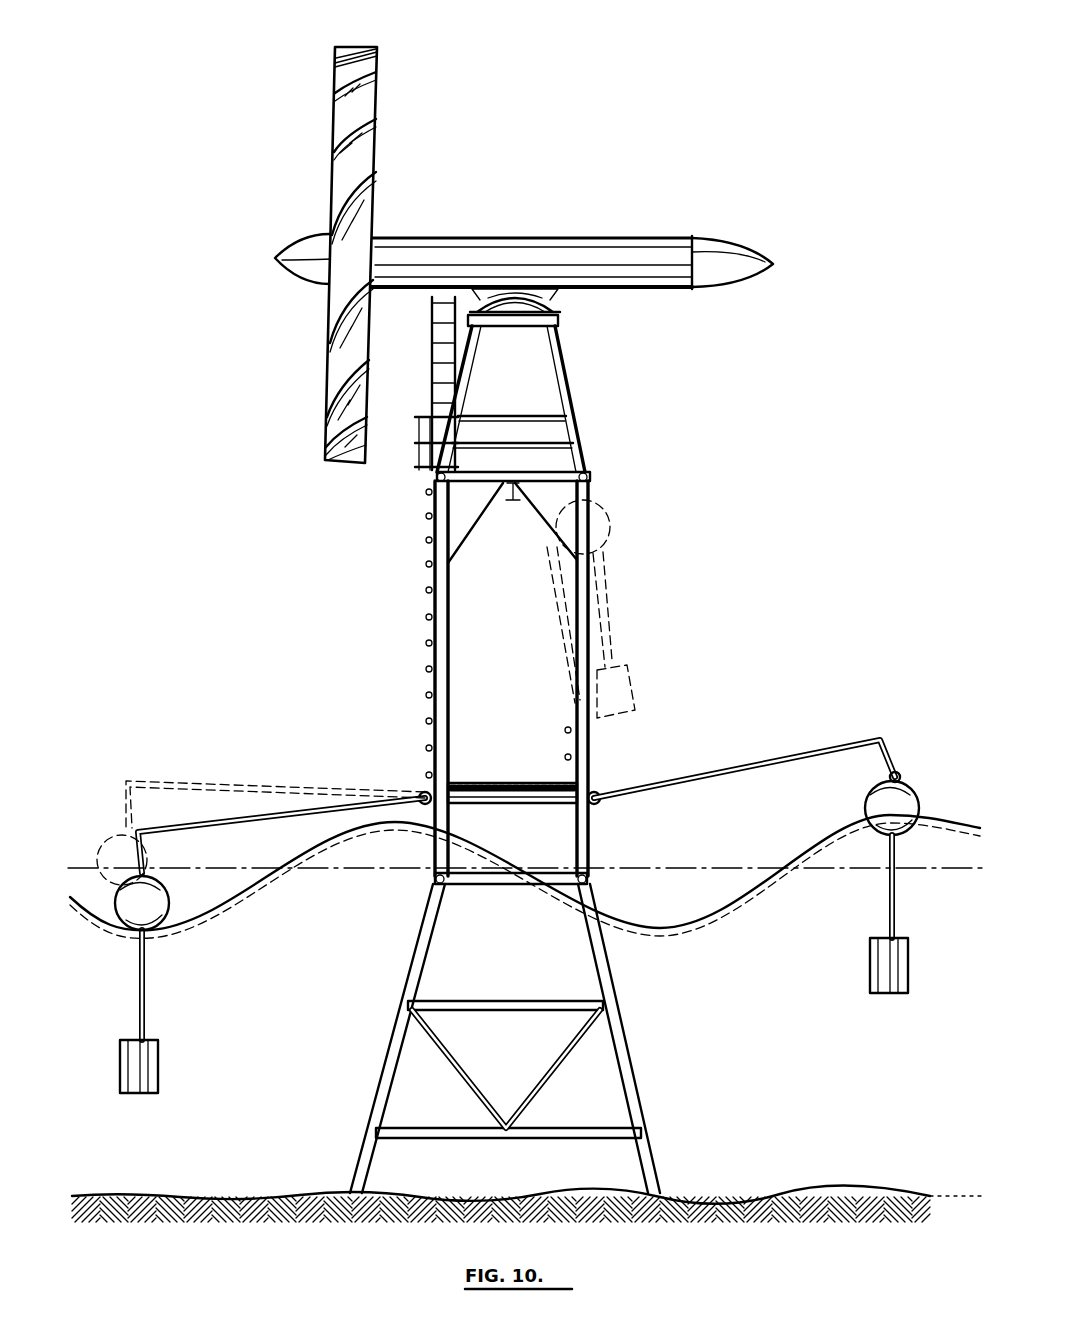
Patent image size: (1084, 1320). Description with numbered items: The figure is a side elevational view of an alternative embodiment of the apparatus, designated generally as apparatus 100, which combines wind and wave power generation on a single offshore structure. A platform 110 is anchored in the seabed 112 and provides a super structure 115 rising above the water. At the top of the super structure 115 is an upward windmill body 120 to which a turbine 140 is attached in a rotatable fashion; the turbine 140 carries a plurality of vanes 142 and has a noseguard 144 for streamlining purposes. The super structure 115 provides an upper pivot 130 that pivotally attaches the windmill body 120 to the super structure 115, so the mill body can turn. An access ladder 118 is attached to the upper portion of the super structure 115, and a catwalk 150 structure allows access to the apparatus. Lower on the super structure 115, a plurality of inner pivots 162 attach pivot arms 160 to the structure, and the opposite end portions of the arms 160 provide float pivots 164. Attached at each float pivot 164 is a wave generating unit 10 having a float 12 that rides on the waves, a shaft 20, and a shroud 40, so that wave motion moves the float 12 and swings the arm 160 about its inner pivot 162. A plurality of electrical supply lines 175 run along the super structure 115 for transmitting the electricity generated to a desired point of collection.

The wave generating unit 10 is at (898, 757).
The float 12 is at (104, 840).
The shaft 20 is at (146, 1005).
The shroud 40 is at (155, 1065).
The apparatus 100 is at (568, 176).
The platform 110 is at (620, 1063).
The seabed 112 is at (770, 1192).
The super structure 115 is at (568, 398).
The access ladder 118 is at (428, 322).
The windmill body 120 is at (586, 248).
The upper pivot 130 is at (540, 308).
The turbine 140 is at (370, 157).
The vanes 142 is at (377, 60).
The noseguard 144 is at (300, 252).
The catwalk 150 is at (540, 784).
The pivot arm 160 is at (226, 787).
The inner pivot 162 is at (421, 793).
The float pivot 164 is at (889, 775).
The electrical supply lines 175 is at (427, 552).